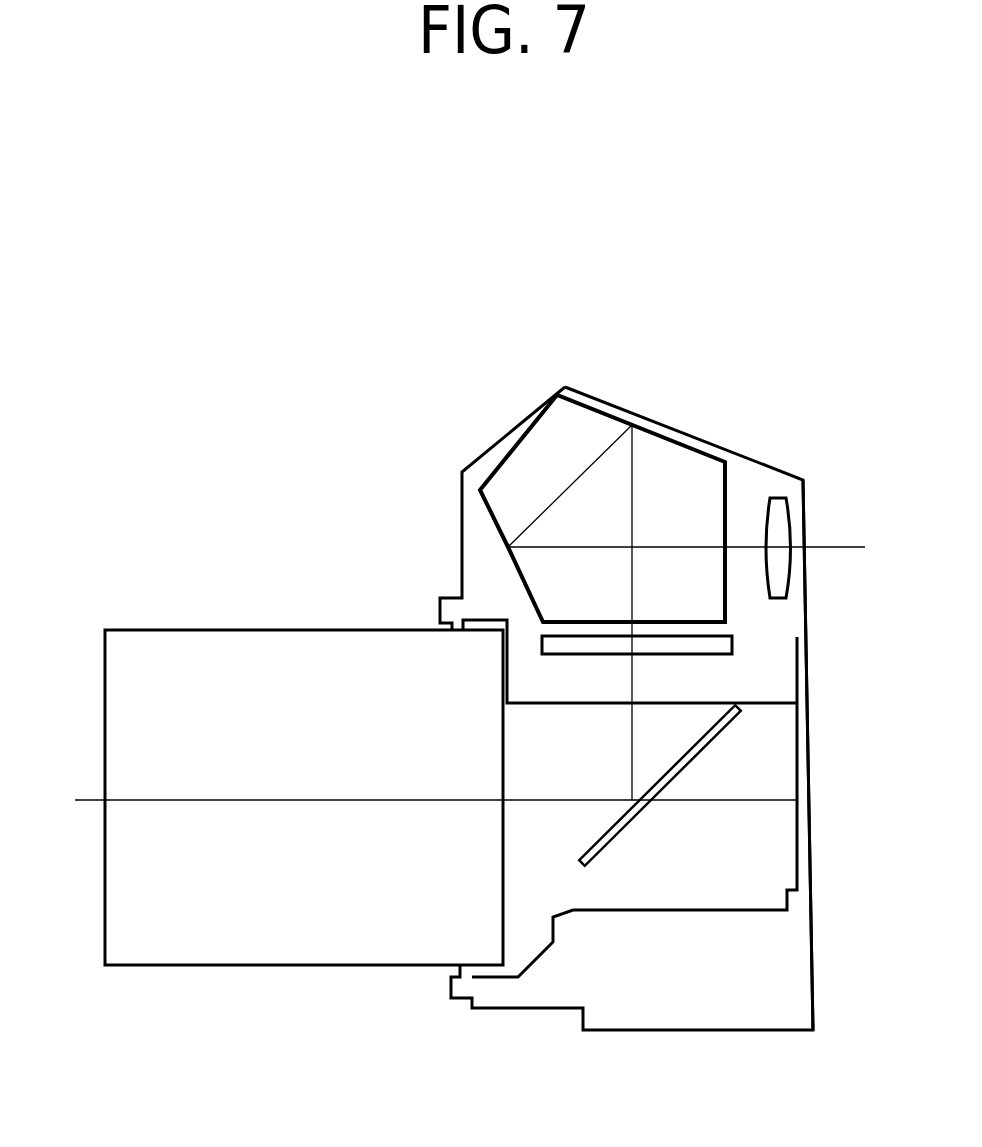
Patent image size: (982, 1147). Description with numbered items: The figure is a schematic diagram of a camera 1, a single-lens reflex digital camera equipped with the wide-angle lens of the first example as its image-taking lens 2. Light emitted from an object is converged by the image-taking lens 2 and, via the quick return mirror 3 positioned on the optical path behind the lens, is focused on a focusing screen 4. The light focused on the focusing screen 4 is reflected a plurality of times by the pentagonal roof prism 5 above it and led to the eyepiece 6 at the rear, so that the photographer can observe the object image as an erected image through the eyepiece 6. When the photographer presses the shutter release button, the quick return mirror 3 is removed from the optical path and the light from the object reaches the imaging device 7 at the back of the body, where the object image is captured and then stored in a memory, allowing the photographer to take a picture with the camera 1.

The camera 1 is at (150, 405).
The image-taking lens 2 is at (197, 650).
The quick return mirror 3 is at (608, 840).
The focusing screen 4 is at (732, 647).
The pentagonal roof prism 5 is at (593, 428).
The eyepiece 6 is at (778, 520).
The imaging device 7 is at (805, 838).